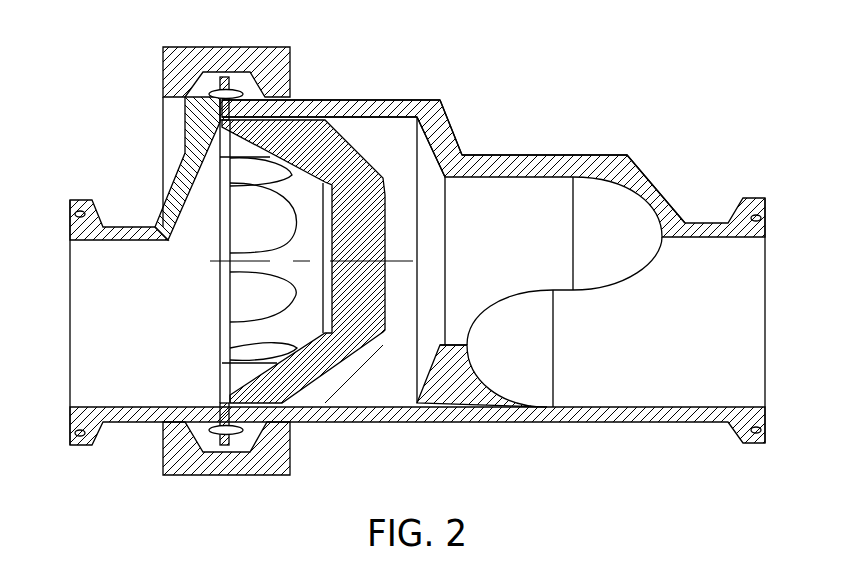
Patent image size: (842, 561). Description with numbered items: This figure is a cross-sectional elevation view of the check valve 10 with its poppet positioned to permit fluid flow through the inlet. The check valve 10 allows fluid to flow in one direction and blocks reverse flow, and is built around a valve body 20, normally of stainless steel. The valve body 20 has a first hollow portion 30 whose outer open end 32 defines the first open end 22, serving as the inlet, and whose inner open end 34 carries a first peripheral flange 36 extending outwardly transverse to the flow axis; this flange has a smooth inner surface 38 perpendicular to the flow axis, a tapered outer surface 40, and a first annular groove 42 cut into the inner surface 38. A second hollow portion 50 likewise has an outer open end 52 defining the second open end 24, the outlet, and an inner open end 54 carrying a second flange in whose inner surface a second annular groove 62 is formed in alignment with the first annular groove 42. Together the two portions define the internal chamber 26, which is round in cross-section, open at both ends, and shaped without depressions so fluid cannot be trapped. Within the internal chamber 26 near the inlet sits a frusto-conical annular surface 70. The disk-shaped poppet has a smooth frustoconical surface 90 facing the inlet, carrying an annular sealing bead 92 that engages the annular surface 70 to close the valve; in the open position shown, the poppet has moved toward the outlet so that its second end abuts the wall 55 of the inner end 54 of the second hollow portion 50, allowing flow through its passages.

The check valve 10 is at (686, 66).
The valve body 20 is at (437, 92).
The first open end 22 is at (767, 413).
The second open end 24 is at (70, 413).
The internal chamber 26 is at (374, 132).
The first hollow portion 30 is at (606, 153).
The outer open end 32 is at (755, 247).
The inner open end 34 is at (305, 107).
The first peripheral flange 36 is at (281, 47).
The inner surface 38 is at (203, 74).
The tapered outer surface 40 is at (265, 437).
The first annular groove 42 is at (226, 446).
The second hollow portion 50 is at (117, 226).
The outer open end 52 is at (67, 278).
The inner open end 54 is at (188, 167).
The wall 55 is at (222, 357).
The second annular groove 62 is at (210, 473).
The annular surface 70 is at (414, 153).
The frustoconical surface 90 is at (355, 368).
The sealing bead 92 is at (378, 340).